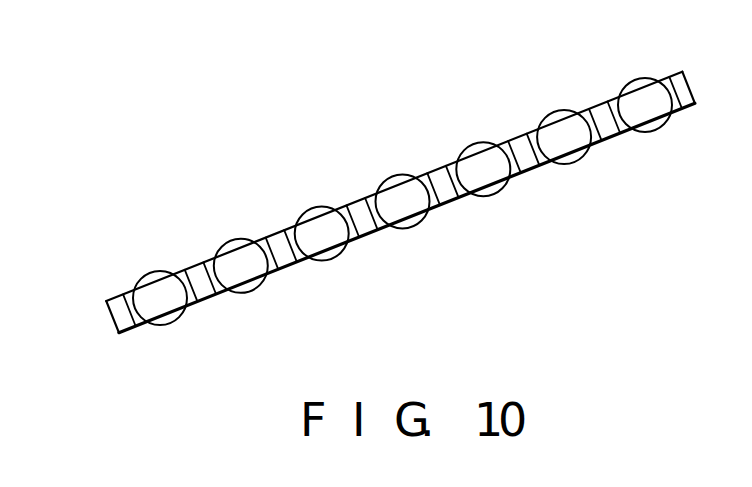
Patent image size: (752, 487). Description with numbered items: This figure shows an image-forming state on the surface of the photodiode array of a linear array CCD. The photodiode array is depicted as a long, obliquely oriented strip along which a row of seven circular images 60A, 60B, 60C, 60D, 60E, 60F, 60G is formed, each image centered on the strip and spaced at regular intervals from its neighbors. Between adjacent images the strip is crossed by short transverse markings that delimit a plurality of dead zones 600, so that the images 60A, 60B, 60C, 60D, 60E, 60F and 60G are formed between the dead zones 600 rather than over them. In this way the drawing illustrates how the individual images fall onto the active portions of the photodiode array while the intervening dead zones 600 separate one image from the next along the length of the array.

The dead zones 600 is at (121, 328).
The image 60A is at (158, 257).
The image 60B is at (241, 232).
The image 60C is at (318, 199).
The image 60D is at (394, 177).
The image 60E is at (468, 147).
The image 60F is at (550, 115).
The image 60G is at (629, 83).